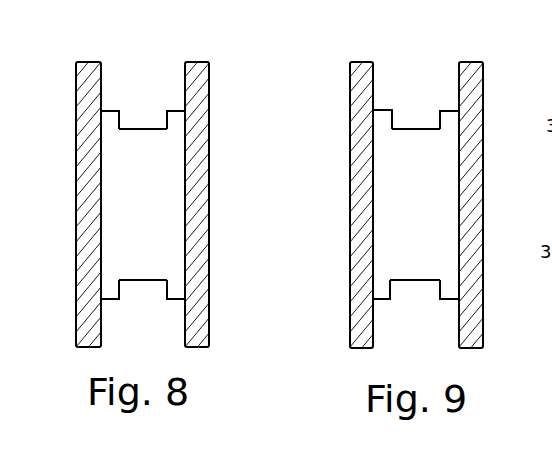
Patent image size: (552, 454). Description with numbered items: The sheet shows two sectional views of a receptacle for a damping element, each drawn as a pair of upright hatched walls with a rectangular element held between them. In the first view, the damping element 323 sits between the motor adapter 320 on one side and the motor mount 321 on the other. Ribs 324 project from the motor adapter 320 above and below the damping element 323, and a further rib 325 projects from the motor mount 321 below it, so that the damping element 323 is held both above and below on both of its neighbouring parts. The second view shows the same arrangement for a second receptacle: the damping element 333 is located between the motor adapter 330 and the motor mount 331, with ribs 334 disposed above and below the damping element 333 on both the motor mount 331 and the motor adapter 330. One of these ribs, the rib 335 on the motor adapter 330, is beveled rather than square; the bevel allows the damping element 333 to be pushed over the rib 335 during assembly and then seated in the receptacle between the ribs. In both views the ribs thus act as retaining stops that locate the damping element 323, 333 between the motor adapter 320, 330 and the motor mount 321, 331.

In FIG. 8, the motor adapter 320 is at (76, 148).
In FIG. 8, the motor mount 321 is at (200, 148).
In FIG. 8, the damping element 323 is at (162, 208).
In FIG. 8, the rib 324 is at (178, 113).
In FIG. 8, the rib 325 is at (178, 288).
In FIG. 9, the motor adapter 330 is at (350, 177).
In FIG. 9, the motor mount 331 is at (470, 152).
In FIG. 9, the damping element 333 is at (433, 208).
In FIG. 9, the rib 334 is at (448, 112).
In FIG. 9, the beveled rib 335 is at (384, 108).